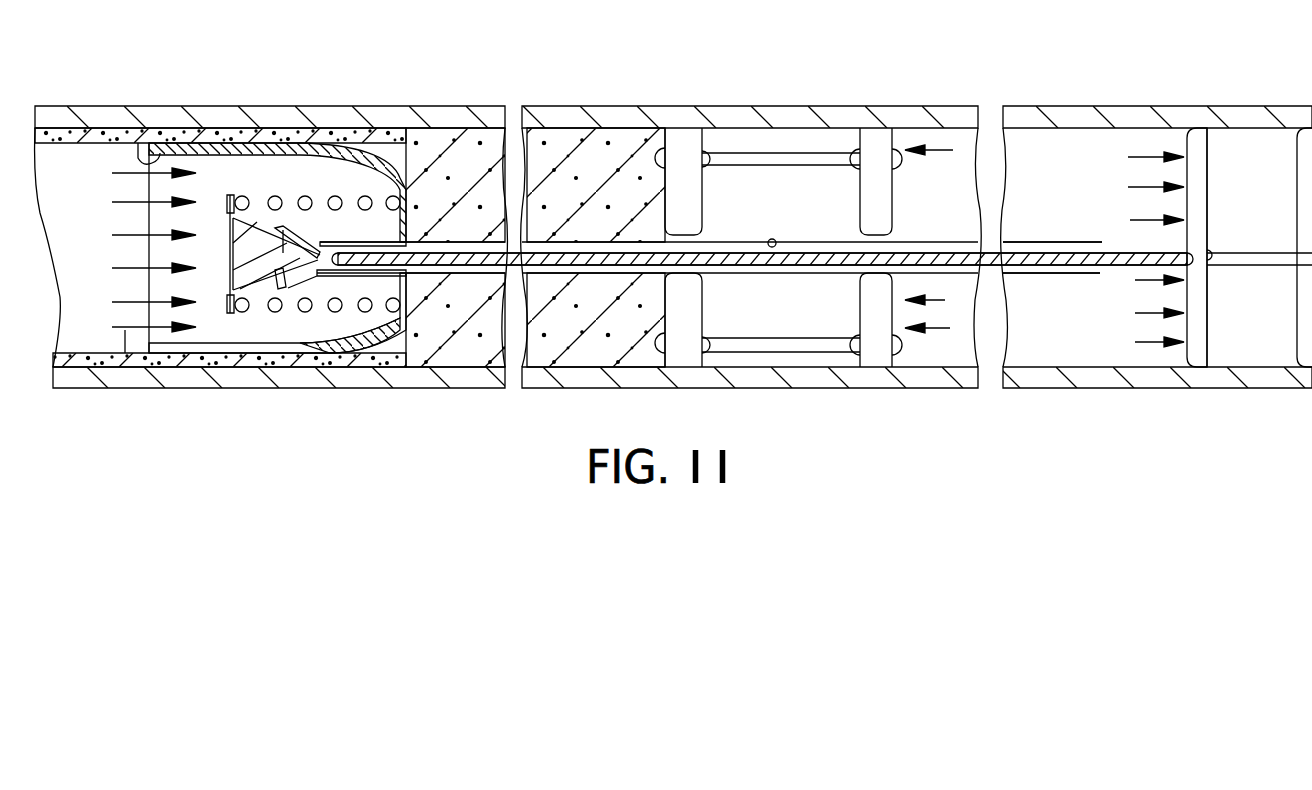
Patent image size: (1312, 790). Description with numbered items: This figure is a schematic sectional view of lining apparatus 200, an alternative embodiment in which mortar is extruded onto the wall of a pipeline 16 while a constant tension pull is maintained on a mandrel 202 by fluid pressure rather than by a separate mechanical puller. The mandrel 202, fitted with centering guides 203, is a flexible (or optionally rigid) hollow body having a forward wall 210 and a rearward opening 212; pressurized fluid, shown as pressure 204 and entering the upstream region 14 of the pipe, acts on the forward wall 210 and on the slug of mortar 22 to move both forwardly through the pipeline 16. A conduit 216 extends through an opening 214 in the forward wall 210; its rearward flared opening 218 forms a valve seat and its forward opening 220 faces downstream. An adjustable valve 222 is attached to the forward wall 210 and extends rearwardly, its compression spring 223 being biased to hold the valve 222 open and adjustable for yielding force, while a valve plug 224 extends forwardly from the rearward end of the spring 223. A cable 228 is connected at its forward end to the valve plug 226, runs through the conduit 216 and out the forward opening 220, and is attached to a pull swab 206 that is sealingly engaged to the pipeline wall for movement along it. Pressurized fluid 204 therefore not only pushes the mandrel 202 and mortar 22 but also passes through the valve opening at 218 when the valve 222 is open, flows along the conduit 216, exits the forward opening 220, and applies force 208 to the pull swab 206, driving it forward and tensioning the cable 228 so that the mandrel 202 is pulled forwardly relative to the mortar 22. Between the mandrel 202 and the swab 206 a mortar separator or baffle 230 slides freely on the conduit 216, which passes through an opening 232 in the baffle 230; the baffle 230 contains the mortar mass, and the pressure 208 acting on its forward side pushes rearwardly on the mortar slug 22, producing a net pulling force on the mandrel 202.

The inlet duct 14 is at (80, 145).
The pipeline 16 is at (590, 108).
The mortar 22 is at (598, 345).
The lining apparatus 200 is at (718, 96).
The mandrel 202 is at (303, 143).
The centering guides 203 is at (284, 360).
The pressure 204 is at (125, 353).
The pull swab 206 is at (1198, 152).
The force 208 is at (937, 138).
The forward wall 210 is at (395, 190).
The rearward opening 212 is at (143, 160).
The opening 214 is at (400, 272).
The conduit 216 is at (1030, 242).
The rearward flared opening 218 is at (275, 269).
The forward opening 220 is at (1100, 273).
The adjustable valve 222 is at (222, 330).
The compression spring 223 is at (335, 313).
The valve plug 224 is at (280, 240).
The valve plug 226 is at (320, 243).
The cable 228 is at (940, 258).
The mortar separator or baffle 230 is at (867, 142).
The opening 232 is at (772, 239).